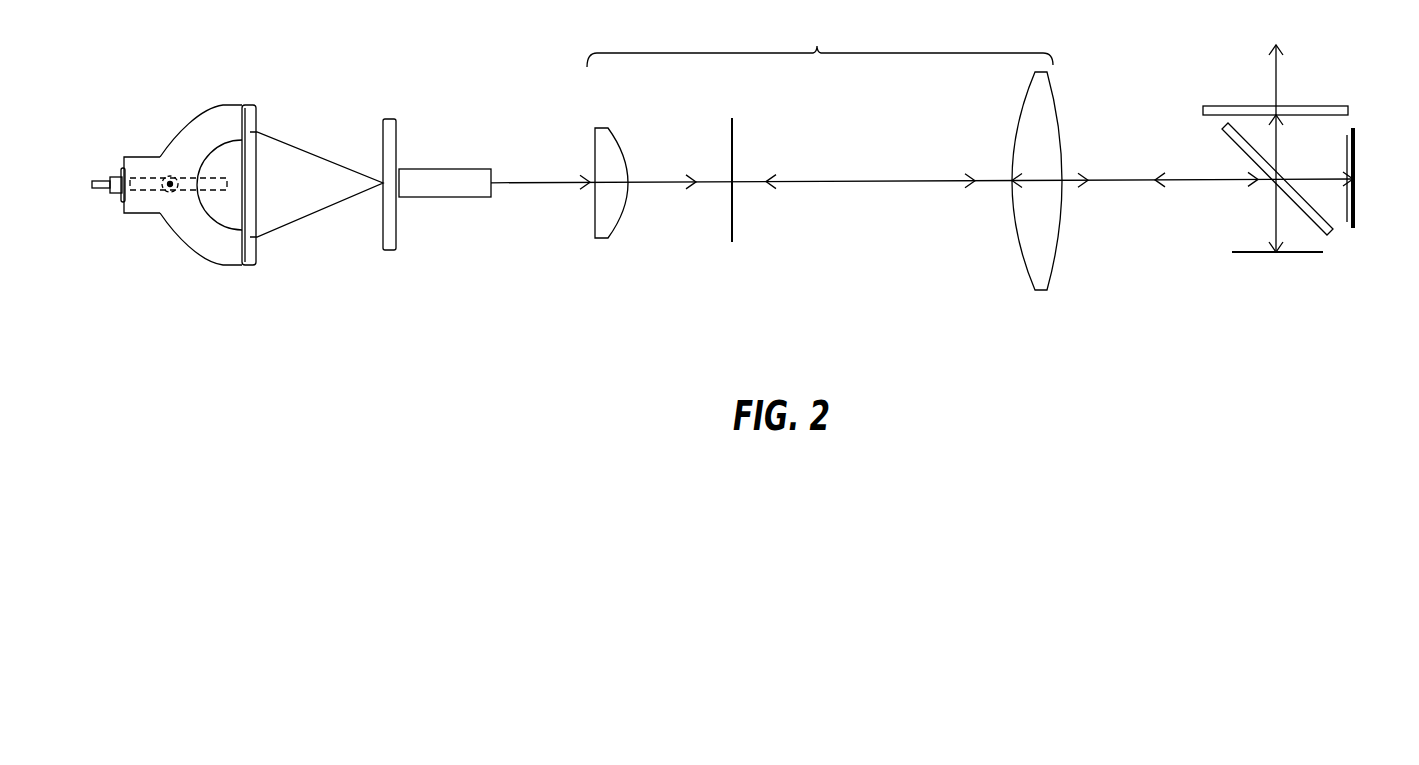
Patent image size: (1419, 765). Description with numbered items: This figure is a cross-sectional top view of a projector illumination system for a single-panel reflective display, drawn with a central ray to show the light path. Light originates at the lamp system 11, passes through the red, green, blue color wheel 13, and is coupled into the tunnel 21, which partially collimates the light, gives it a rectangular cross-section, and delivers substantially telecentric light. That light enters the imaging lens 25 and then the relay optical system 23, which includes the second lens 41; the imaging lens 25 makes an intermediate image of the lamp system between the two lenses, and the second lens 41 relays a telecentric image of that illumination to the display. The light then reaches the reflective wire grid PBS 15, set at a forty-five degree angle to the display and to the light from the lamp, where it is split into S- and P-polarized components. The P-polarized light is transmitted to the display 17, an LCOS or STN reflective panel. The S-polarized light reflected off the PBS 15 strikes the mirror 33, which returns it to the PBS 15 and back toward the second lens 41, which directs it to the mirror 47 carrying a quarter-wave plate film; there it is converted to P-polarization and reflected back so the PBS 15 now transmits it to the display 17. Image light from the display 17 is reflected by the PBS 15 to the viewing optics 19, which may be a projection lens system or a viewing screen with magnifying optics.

The lamp system 11 is at (190, 247).
The color wheel 13 is at (383, 130).
The tunnel 21 is at (452, 169).
The relay optical system 23 is at (820, 41).
The imaging lens 25 is at (605, 128).
The mirror 47 is at (732, 130).
The second lens 41 is at (1043, 290).
The viewing optics 19 is at (1318, 106).
The reflective wire grid PBS 15 is at (1222, 136).
The display 17 is at (1356, 137).
The mirror 33 is at (1300, 255).